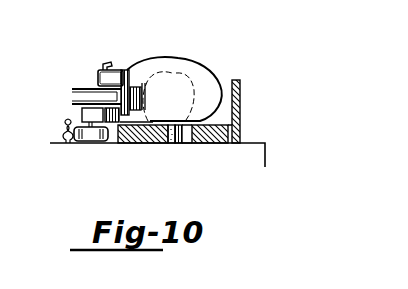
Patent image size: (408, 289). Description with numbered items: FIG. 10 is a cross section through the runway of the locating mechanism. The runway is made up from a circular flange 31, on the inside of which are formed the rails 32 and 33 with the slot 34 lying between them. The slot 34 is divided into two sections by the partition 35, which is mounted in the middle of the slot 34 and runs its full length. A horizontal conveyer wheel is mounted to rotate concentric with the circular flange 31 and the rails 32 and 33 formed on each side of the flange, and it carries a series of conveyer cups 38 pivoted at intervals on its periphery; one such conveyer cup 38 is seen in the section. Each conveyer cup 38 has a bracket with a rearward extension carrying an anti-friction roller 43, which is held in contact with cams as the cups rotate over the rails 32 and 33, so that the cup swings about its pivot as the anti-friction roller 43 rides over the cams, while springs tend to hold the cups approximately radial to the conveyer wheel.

The circular flange 31 is at (241, 93).
The rail 32 is at (217, 147).
The rail 33 is at (137, 143).
The slot 34 is at (172, 147).
The partition 35 is at (179, 146).
The conveyer cup 38 is at (193, 73).
The anti-friction roller 43 is at (92, 134).